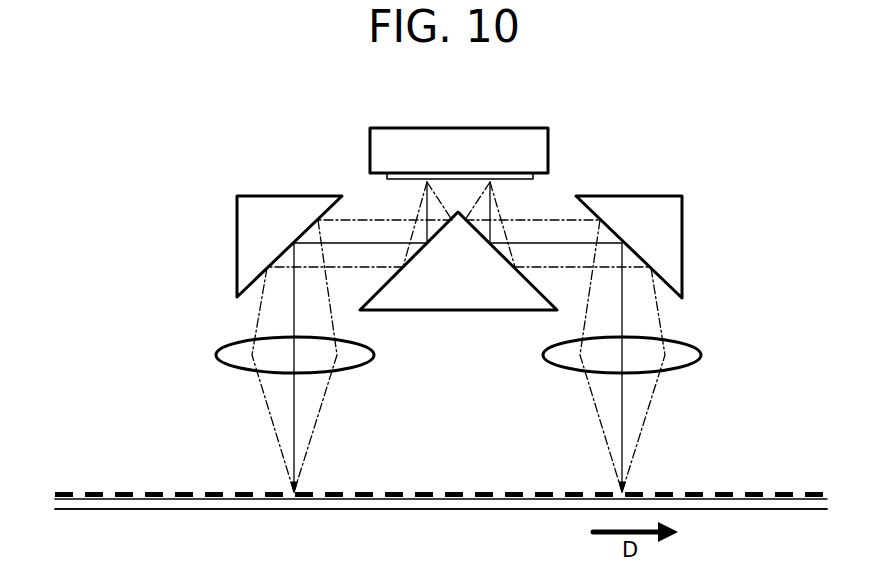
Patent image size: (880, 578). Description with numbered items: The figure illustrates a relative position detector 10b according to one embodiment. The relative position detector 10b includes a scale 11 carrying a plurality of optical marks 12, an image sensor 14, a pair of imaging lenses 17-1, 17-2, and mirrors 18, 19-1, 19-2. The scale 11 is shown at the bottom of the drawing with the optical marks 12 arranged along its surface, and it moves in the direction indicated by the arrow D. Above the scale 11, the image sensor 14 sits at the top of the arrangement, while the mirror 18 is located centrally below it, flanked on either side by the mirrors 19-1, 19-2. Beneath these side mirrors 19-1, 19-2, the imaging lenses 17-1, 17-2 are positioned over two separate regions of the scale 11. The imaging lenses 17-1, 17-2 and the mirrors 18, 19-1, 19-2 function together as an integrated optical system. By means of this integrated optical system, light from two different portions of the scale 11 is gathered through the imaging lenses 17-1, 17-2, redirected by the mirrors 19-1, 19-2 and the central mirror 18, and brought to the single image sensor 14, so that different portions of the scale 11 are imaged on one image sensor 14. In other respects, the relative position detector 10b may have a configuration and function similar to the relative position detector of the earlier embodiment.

The relative position detector 10b is at (684, 140).
The image sensor 14 is at (548, 151).
The mirror 18 is at (452, 312).
The mirror 19-1 is at (237, 242).
The mirror 19-2 is at (682, 240).
The imaging lens 17-1 is at (217, 355).
The imaging lens 17-2 is at (700, 355).
The optical marks 12 is at (478, 492).
The scale 11 is at (787, 508).